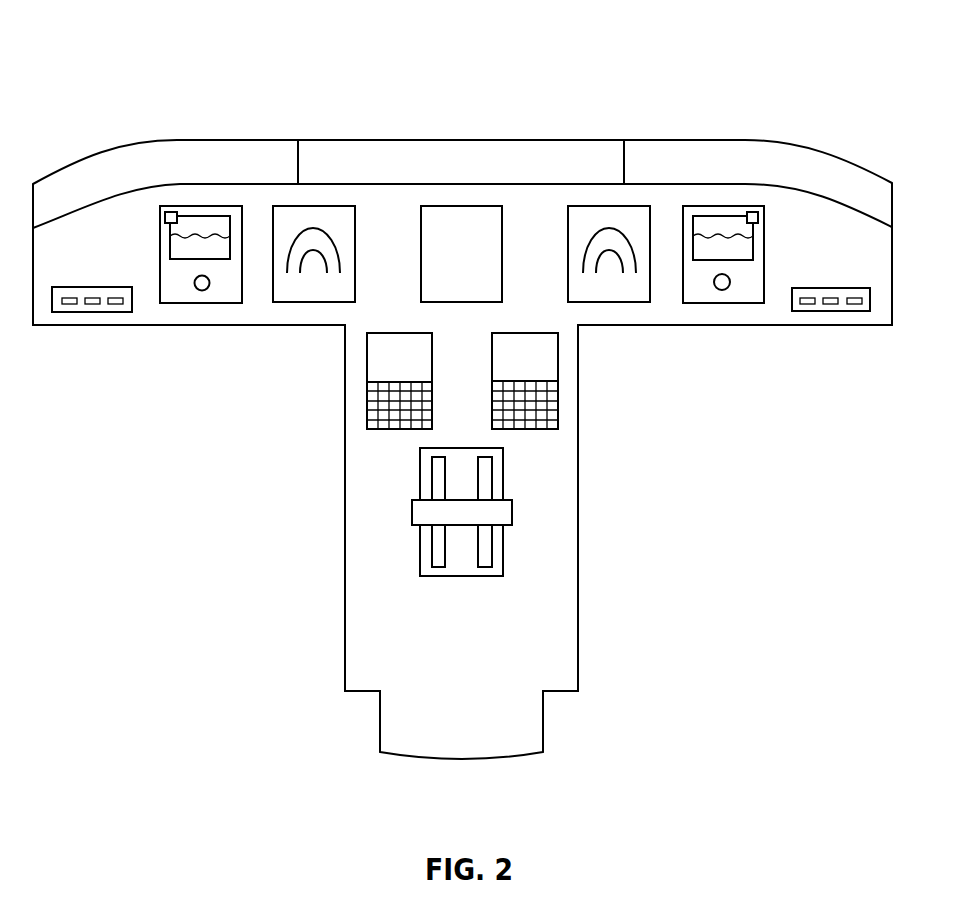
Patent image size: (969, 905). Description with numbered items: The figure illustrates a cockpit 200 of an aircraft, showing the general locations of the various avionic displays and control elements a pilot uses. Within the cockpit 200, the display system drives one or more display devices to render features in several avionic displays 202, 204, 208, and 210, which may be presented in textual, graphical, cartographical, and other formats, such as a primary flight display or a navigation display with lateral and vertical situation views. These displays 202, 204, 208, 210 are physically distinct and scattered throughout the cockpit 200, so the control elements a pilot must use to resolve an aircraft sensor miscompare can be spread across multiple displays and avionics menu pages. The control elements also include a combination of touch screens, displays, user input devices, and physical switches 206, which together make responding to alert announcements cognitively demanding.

The cockpit 200 is at (138, 58).
The display 202 is at (200, 207).
The display 204 is at (365, 412).
The physical switches 206 is at (68, 298).
The display 208 is at (313, 206).
The display 210 is at (485, 267).